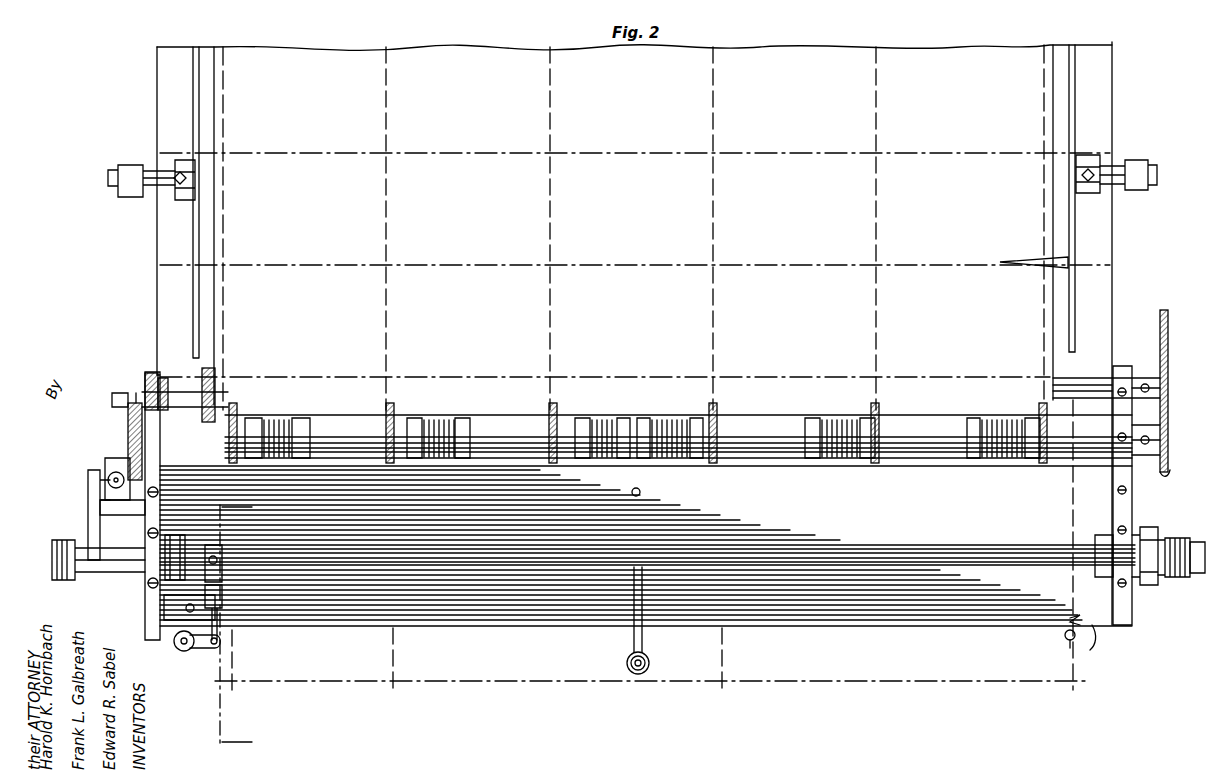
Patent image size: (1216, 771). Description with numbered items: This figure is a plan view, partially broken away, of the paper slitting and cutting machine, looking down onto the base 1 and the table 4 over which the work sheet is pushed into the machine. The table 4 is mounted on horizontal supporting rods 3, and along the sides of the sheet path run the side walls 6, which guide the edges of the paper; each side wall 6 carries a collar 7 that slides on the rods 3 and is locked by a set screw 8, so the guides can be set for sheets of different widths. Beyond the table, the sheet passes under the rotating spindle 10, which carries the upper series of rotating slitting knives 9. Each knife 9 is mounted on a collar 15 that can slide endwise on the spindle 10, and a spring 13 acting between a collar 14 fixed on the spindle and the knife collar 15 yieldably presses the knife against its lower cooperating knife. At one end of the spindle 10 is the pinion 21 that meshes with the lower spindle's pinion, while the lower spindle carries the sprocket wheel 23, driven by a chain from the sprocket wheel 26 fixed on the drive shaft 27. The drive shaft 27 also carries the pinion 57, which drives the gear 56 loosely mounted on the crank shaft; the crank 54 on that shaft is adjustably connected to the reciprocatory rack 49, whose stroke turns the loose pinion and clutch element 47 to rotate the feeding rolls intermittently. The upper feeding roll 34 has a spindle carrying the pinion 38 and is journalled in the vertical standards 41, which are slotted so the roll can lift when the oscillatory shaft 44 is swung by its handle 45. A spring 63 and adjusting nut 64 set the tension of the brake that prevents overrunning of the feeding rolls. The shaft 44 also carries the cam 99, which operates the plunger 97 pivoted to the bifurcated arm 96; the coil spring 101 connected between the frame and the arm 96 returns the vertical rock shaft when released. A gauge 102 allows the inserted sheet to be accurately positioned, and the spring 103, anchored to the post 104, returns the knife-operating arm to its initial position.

The base 1 is at (172, 232).
The horizontal supporting rods 3 is at (160, 185).
The table 4 is at (215, 130).
The side walls 6 is at (192, 92).
The collars 7 is at (182, 165).
The set screws 8 is at (182, 190).
The rotating slitting knives 9 is at (237, 420).
The rotating spindle 10 is at (512, 420).
The springs 13 is at (277, 420).
The collars 14 is at (302, 418).
The collars 15 is at (252, 420).
The pinion 21 is at (136, 393).
The sprocket wheel 23 is at (1168, 470).
The sprocket wheel 26 is at (1167, 322).
The drive shaft 27 is at (1088, 377).
The feeding roll 34 is at (165, 548).
The pinion 38 is at (1152, 530).
The vertical standards 41 is at (1115, 497).
The oscillatory shaft 44 is at (866, 550).
The handle 45 is at (645, 646).
The clutch element 47 is at (72, 540).
The reciprocatory rack 49 is at (90, 503).
The crank 54 is at (116, 458).
The gear 56 is at (202, 398).
The pinion 57 is at (200, 378).
The spring 63 is at (1177, 578).
The adjusting nut 64 is at (1197, 575).
The bifurcated arm 96 is at (205, 648).
The plunger 97 is at (225, 626).
The cam 99 is at (224, 548).
The coil spring 101 is at (180, 650).
The gauge 102 is at (1043, 262).
The spring 103 is at (1085, 627).
The post 104 is at (1072, 640).